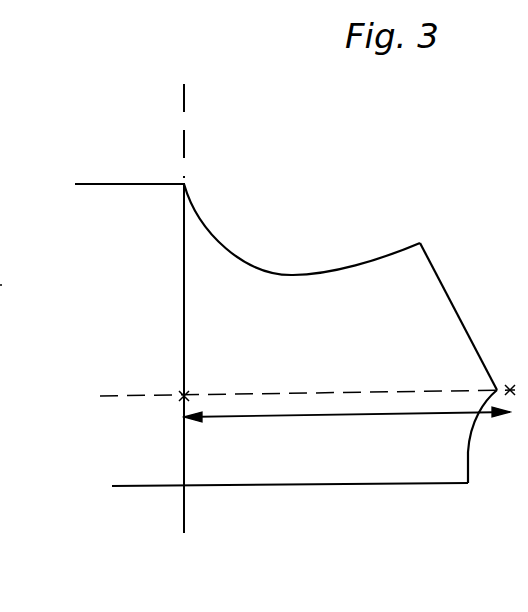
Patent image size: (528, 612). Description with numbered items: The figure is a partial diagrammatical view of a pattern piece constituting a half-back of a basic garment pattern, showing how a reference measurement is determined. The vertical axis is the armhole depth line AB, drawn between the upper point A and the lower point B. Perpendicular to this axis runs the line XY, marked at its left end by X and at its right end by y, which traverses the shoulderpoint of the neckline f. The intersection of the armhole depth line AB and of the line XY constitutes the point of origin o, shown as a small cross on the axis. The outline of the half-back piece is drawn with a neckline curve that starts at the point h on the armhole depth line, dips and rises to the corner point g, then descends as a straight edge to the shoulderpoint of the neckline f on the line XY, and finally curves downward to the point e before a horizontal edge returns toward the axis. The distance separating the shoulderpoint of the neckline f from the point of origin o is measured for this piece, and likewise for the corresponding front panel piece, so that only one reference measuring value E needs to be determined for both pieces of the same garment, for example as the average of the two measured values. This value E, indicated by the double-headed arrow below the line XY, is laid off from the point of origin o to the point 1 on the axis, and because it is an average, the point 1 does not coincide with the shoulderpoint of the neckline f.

The armhole depth line end point A is at (179, 118).
The armhole depth line end point B is at (180, 374).
The line XY end point X is at (295, 400).
The line XY end point y is at (9, 288).
The point of origin o is at (174, 396).
The reference measurement point 1 is at (516, 383).
The pattern point h is at (247, 220).
The pattern point g is at (458, 298).
The shoulderpoint of the neckline f is at (484, 422).
The pattern point e is at (299, 487).
The reference measurement E is at (347, 421).